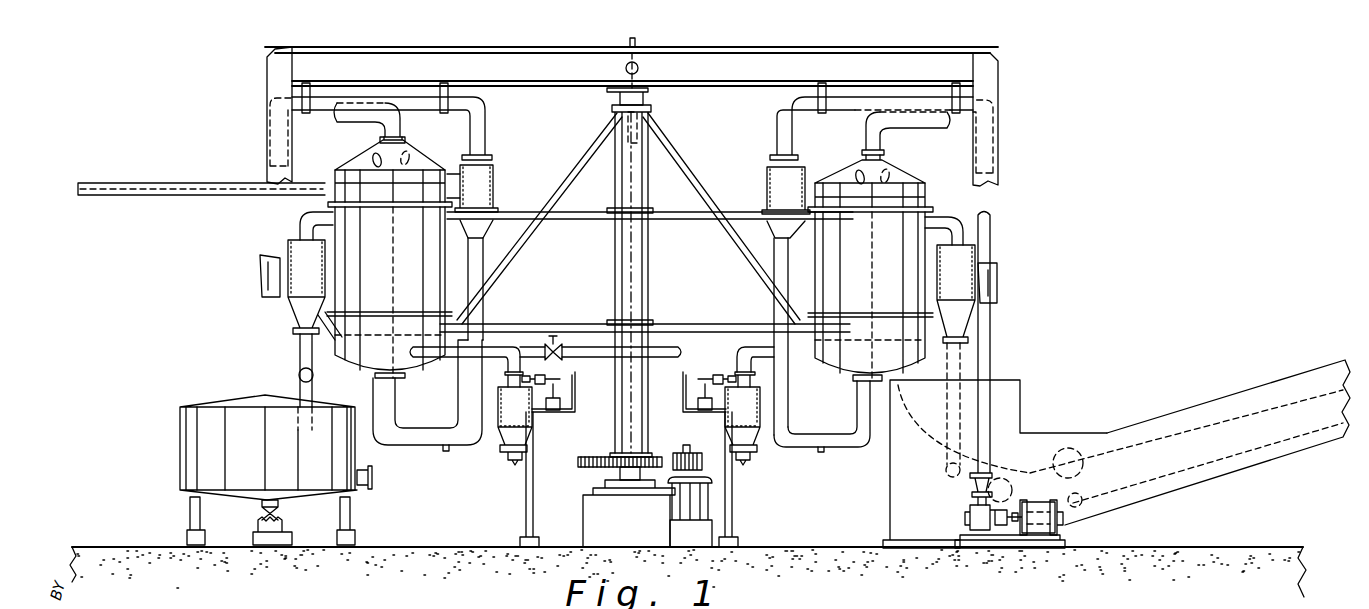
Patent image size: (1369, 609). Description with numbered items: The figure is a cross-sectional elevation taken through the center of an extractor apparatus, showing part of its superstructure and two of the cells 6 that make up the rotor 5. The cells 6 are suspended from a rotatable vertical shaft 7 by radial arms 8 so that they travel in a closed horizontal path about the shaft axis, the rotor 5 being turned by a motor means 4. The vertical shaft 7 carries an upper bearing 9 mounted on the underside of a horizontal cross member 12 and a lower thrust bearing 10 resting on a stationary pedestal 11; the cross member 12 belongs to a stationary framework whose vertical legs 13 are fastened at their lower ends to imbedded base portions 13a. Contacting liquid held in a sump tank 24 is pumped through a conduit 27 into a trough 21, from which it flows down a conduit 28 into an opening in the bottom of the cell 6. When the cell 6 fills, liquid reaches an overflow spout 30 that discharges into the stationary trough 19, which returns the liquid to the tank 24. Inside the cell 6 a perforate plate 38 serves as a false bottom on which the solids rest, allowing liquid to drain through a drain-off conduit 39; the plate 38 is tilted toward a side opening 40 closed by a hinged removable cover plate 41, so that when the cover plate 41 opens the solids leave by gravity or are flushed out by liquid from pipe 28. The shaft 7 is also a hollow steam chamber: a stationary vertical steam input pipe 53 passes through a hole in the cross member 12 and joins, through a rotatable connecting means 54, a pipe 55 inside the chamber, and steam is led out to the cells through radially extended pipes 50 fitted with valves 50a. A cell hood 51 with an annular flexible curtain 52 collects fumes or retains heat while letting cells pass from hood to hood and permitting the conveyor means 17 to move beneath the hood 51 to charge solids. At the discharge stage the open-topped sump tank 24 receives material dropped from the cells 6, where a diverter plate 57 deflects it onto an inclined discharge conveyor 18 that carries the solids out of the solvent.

The motor means 4 is at (705, 507).
The rotor 5 is at (752, 49).
The cell 6 is at (425, 286).
The vertical shaft 7 is at (650, 288).
The radial arms 8 is at (695, 219).
The upper bearing assembly 9 is at (618, 97).
The lower thrust bearing 10 is at (612, 467).
The stationary pedestal 11 is at (590, 516).
The horizontal cross member 12 is at (733, 80).
The vertical legs 13 is at (267, 68).
The imbedded base portions 13a is at (270, 550).
The conveyor means 17 is at (200, 182).
The discharge conveyor 18 is at (1170, 478).
The stationary trough 19 is at (282, 298).
The trough 21 is at (497, 188).
The sump tank 24 is at (178, 440).
The conduit 27 is at (488, 120).
The conduit 28 is at (400, 458).
The overflow spout 30 is at (310, 221).
The perforate plate 38 is at (390, 350).
The drain-off conduit 39 is at (450, 362).
The side opening 40 is at (345, 314).
The hinged removable cover plate 41 is at (330, 340).
The radially extended pipes 50 is at (585, 362).
The valves 50a is at (553, 338).
The cell hood 51 is at (355, 160).
The annular flexible curtain 52 is at (452, 183).
The vertical steam input pipe 53 is at (637, 42).
The rotatable connecting means 54 is at (640, 68).
The pipe 55 is at (640, 140).
The diverter plate 57 is at (935, 455).